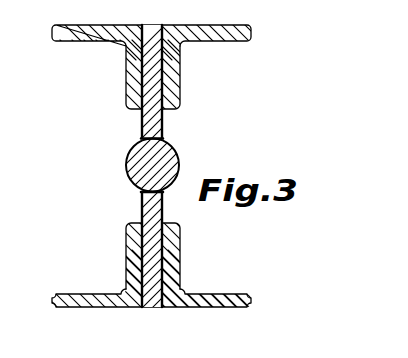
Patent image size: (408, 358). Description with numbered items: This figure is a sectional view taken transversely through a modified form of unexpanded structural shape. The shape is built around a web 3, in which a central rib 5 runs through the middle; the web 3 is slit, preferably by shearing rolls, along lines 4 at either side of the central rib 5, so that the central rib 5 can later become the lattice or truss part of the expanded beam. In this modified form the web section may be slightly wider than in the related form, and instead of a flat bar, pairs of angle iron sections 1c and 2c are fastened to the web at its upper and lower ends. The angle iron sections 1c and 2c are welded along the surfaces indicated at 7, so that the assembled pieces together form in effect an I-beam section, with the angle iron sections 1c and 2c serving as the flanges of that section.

The angle iron sections 1c is at (86, 42).
The angle iron sections 2c is at (104, 279).
The web 3 is at (158, 117).
The lines 4 is at (157, 143).
The central rib 5 is at (132, 160).
The surfaces 7 is at (141, 88).